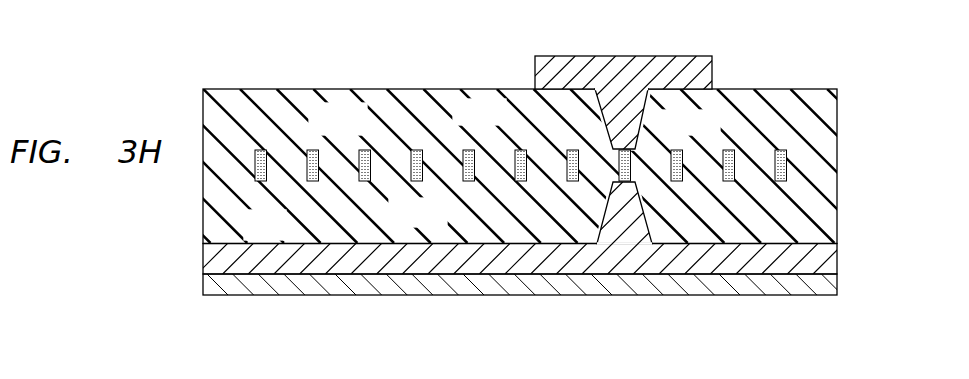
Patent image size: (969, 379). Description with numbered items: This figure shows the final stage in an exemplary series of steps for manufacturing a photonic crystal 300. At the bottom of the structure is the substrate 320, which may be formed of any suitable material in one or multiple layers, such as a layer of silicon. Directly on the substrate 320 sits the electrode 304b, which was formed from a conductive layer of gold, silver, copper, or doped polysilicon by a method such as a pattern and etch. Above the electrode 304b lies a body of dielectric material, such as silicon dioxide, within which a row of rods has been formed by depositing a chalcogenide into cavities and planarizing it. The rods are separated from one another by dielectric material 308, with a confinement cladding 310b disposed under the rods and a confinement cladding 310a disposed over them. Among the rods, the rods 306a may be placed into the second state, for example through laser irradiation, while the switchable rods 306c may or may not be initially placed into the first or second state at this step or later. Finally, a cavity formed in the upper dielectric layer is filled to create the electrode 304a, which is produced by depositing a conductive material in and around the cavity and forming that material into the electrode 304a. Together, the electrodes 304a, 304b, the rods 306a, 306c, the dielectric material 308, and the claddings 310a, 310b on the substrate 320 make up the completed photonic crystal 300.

The photonic crystal 300 is at (513, 177).
The electrode 304a is at (599, 85).
The electrode 304b is at (203, 262).
The rods 306a is at (470, 150).
The switchable rods 306c is at (630, 163).
The dielectric material 308 is at (283, 182).
The confinement cladding 310a is at (365, 132).
The confinement cladding 310b is at (444, 224).
The substrate 320 is at (267, 294).